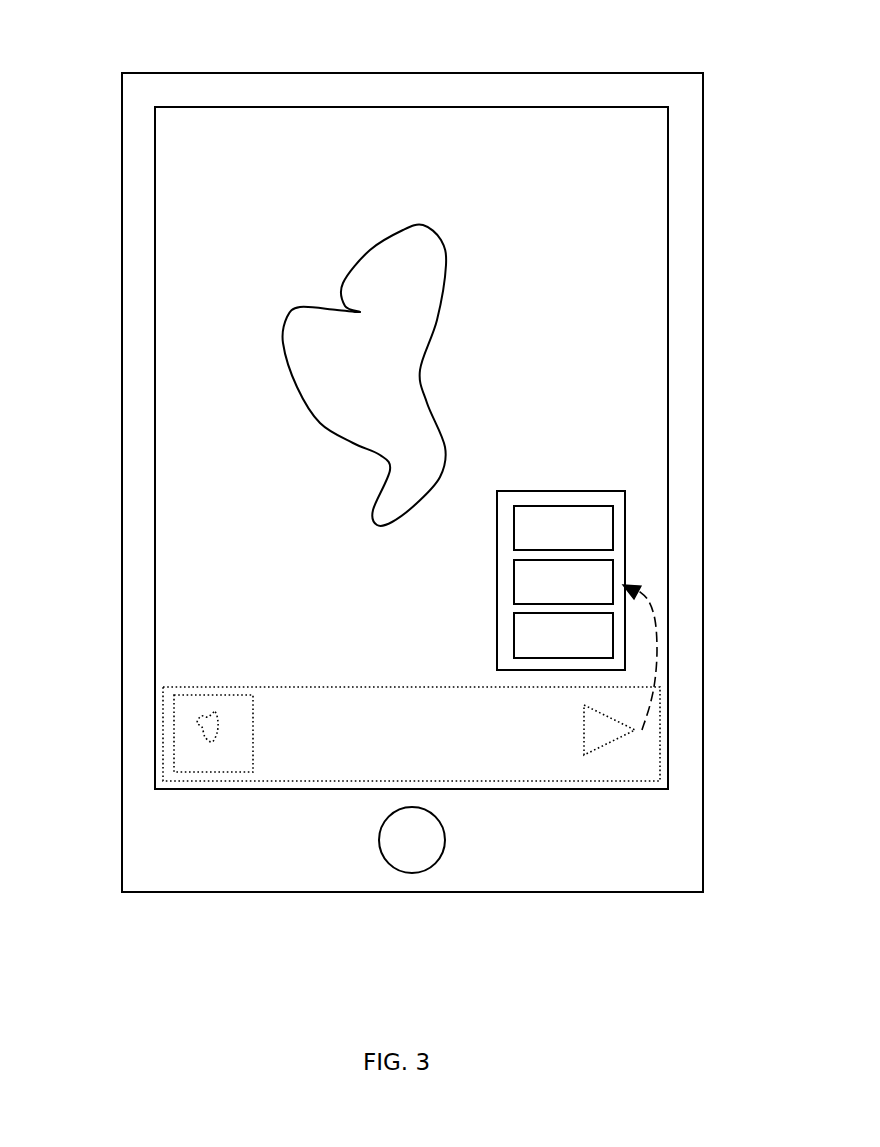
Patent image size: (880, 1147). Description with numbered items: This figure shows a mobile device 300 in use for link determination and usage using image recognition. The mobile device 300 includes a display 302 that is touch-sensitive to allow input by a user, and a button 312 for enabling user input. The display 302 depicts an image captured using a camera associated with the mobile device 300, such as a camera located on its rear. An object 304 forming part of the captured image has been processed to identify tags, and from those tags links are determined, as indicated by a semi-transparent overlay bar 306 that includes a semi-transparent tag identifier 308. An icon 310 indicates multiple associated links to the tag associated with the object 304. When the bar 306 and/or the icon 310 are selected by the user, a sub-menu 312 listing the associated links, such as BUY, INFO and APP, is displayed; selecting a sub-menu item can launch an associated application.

The mobile device 300 is at (695, 862).
The display 302 is at (175, 532).
The object 304 is at (428, 253).
The semi-transparent overlay bar 306 is at (345, 700).
The semi-transparent tag identifier 308 is at (240, 748).
The icon 310 is at (584, 733).
The button / sub-menu 312 is at (548, 491).